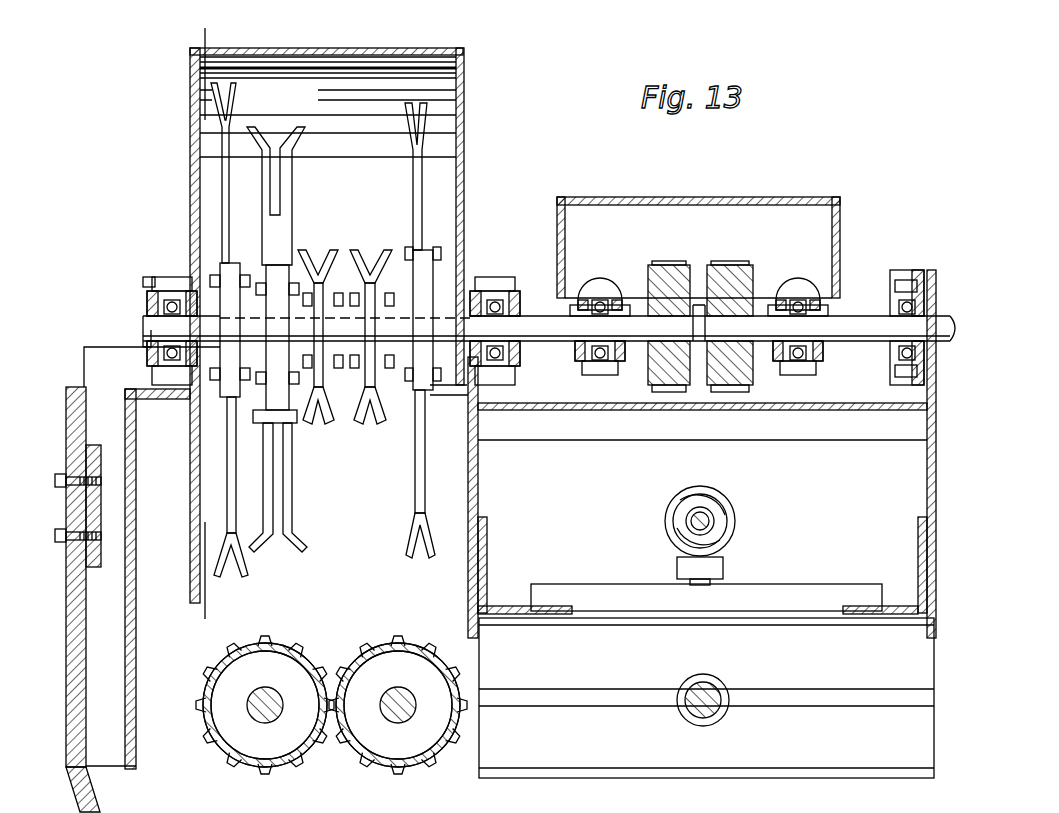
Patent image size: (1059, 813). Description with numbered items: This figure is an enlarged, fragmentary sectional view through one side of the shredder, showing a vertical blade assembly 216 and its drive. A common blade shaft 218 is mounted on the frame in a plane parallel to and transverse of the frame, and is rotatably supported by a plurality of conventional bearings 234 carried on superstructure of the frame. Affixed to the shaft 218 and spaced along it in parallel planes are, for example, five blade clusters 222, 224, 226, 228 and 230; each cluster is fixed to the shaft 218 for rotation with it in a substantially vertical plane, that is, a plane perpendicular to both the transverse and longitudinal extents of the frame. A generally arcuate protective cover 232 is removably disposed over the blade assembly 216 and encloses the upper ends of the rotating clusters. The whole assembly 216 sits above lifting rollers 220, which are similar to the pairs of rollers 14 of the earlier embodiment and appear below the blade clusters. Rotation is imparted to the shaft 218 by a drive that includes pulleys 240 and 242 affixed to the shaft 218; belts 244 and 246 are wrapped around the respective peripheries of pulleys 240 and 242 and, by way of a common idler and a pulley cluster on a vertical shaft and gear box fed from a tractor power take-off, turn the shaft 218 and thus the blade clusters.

The pair of rollers 14 is at (196, 35).
The vertical blade assembly 216 is at (174, 227).
The blade shaft 218 is at (852, 320).
The lifting rollers 220 is at (374, 628).
The blade cluster 222 is at (236, 111).
The blade cluster 224 is at (300, 184).
The blade cluster 226 is at (326, 249).
The lower fork tines 228 is at (372, 428).
The blade cluster 230 is at (400, 506).
The protective cover 232 is at (463, 92).
The bearings 234 is at (149, 293).
The pulley 240 is at (673, 370).
The pulley 242 is at (762, 280).
The belt 244 is at (683, 246).
The belt 246 is at (733, 262).